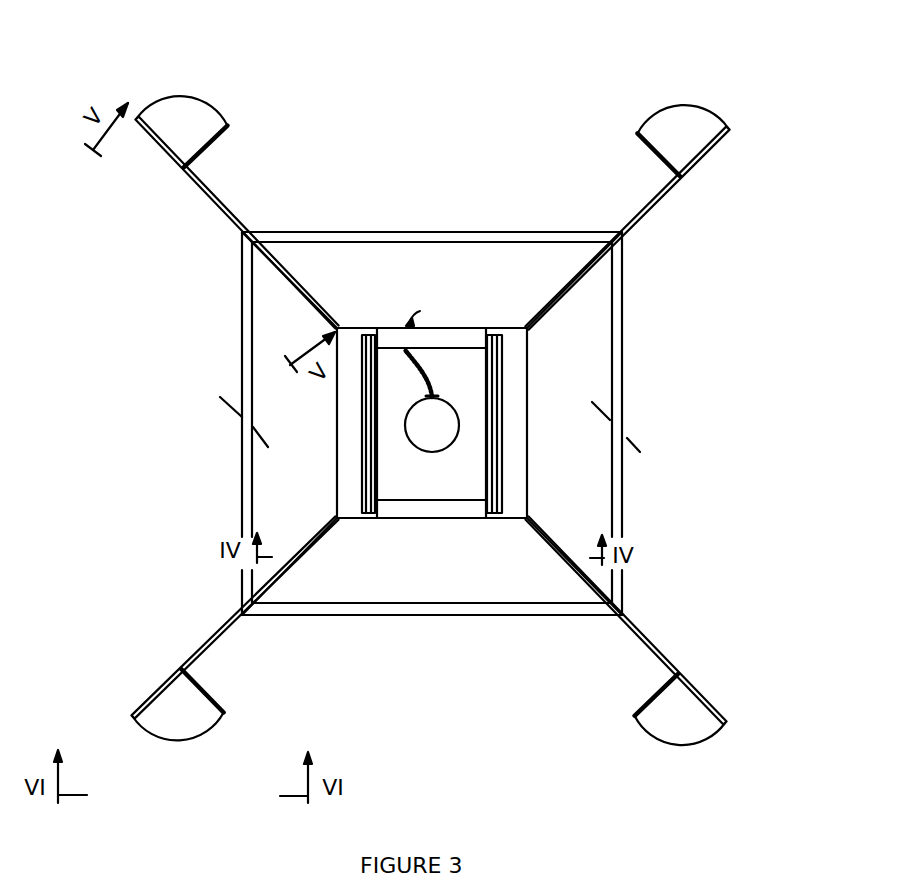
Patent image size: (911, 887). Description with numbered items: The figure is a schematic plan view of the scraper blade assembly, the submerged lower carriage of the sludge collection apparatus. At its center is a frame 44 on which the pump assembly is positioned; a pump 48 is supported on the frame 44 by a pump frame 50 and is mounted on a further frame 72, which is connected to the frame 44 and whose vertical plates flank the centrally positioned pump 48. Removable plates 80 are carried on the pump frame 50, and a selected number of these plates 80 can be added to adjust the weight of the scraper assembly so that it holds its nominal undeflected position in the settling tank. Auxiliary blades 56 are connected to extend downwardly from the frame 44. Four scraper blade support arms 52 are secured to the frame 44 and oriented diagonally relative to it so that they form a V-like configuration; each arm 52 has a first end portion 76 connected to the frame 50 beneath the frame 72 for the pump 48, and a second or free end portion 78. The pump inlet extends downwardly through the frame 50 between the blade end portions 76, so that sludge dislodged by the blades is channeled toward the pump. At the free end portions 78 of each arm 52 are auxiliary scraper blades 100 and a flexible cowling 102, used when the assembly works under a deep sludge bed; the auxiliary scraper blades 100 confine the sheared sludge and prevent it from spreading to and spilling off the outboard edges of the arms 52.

The frame 44 is at (625, 353).
The pump 48 is at (432, 432).
The pump frame 50 is at (508, 430).
The scraper blade support arms 52 is at (208, 202).
The auxiliary blades 56 is at (225, 398).
The frame 72 is at (382, 393).
The first end portion 76 is at (322, 302).
The second or free end portion 78 is at (157, 145).
The removable plates 80 is at (355, 465).
The auxiliary scraper blades 100 is at (218, 140).
The flexible cowling 102 is at (182, 110).